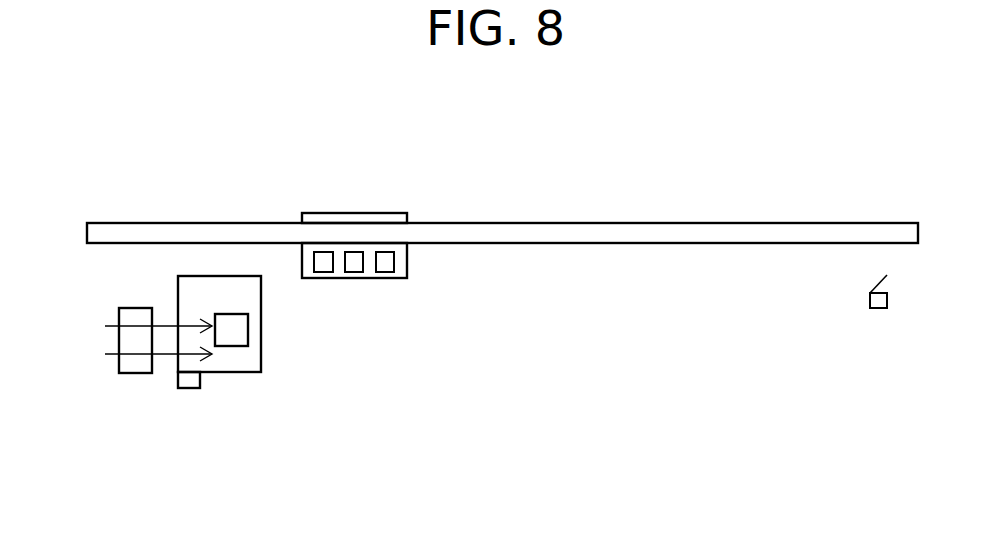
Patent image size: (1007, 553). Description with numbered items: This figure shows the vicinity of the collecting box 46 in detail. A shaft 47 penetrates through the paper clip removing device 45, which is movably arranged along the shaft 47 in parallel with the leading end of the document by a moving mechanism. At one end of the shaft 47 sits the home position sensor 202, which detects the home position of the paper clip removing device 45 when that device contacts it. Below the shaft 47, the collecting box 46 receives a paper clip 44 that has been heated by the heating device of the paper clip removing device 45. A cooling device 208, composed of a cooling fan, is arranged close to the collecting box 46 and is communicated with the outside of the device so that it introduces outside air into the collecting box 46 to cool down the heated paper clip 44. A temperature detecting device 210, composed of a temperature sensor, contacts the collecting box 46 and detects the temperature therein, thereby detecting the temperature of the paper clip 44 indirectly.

The shaft 47 is at (614, 223).
The paper clip removing device 45 is at (364, 213).
The collecting box 46 is at (178, 288).
The paper clip 44 is at (248, 331).
The cooling device 208 is at (124, 318).
The temperature detecting device 210 is at (185, 390).
The home position sensor 202 is at (875, 310).